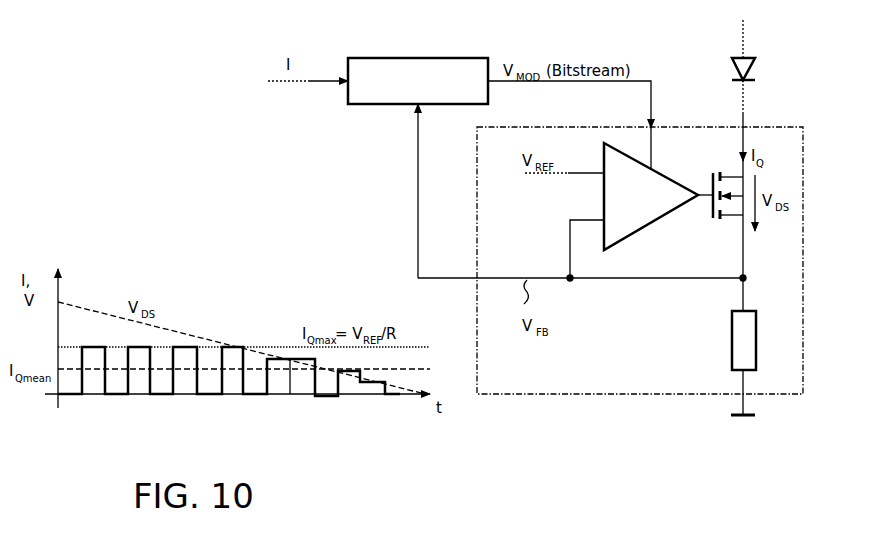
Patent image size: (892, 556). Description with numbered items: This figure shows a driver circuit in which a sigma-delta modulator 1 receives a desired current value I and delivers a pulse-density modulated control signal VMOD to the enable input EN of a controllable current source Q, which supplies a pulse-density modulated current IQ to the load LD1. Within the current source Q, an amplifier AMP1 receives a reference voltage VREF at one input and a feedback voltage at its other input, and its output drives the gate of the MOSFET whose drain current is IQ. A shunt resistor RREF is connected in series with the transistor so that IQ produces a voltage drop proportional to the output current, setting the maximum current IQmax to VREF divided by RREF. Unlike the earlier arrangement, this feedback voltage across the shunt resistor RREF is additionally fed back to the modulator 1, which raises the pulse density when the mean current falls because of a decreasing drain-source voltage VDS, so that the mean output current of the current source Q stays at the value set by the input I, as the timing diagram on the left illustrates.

The sigma-delta modulator 1 is at (424, 57).
The controllable current source Q is at (803, 190).
The laser diode LD1 is at (759, 66).
The amplifier AMP1 is at (651, 199).
The shunt resistor RREF is at (720, 340).